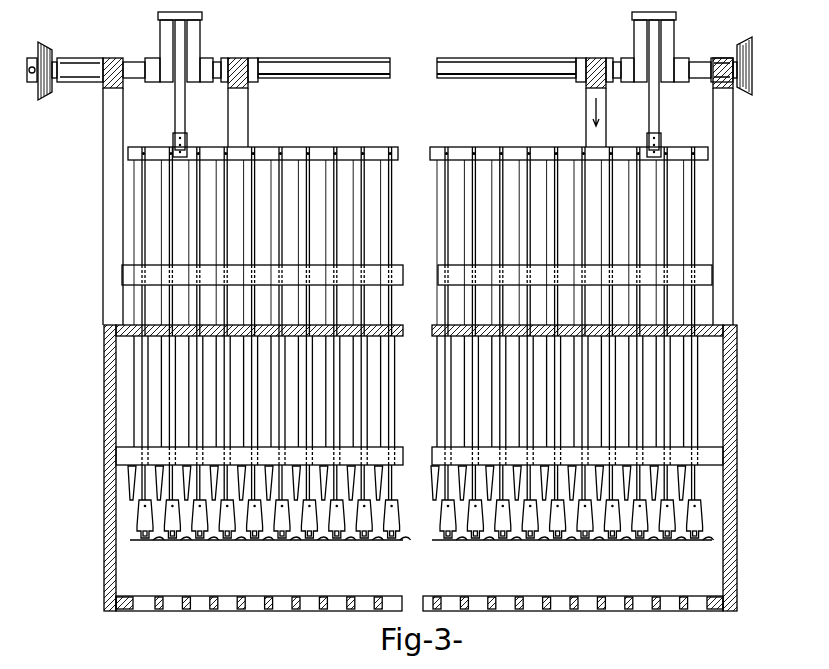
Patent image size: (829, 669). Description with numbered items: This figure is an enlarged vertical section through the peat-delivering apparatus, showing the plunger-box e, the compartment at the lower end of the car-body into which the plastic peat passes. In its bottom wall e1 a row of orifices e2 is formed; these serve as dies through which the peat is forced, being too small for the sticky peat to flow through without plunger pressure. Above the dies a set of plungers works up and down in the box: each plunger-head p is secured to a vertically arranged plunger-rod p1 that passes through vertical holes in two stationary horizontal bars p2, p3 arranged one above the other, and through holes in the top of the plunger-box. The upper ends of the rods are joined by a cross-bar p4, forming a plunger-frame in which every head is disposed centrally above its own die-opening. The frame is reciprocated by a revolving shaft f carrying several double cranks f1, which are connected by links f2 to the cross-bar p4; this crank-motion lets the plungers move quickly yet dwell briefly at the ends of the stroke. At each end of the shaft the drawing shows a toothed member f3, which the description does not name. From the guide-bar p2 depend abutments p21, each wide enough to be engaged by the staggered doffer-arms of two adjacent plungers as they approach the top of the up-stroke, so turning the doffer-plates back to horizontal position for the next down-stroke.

The revolving shaft f is at (309, 64).
The double cranks f1 is at (200, 44).
The links f2 is at (178, 118).
The bevel gear f3 is at (45, 100).
The plunger-head p is at (167, 521).
The plunger-rod p1 is at (200, 388).
The horizontal bar p2 is at (118, 457).
The horizontal bar p3 is at (127, 273).
The cross-bar p4 is at (320, 148).
The abutment p21 is at (160, 492).
The plunger-box e is at (708, 560).
The bottom wall e1 is at (298, 604).
The orifices e2 is at (262, 604).